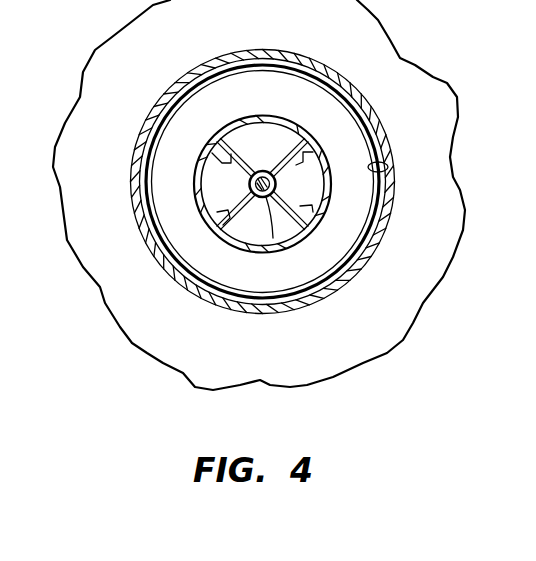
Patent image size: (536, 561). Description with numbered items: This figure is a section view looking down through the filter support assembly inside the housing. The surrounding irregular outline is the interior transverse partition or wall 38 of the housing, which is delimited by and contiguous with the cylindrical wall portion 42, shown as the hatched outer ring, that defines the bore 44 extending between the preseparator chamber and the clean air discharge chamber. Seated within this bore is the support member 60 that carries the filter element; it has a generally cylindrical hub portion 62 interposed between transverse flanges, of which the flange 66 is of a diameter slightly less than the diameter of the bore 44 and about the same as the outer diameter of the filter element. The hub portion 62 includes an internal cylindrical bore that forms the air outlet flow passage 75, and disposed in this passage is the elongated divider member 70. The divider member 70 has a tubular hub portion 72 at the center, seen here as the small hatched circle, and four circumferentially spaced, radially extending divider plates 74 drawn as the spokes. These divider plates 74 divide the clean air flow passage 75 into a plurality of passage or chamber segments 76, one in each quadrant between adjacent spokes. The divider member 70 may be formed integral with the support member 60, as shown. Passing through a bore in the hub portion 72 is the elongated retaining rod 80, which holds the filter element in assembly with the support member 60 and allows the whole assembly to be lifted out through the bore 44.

The interior transverse partition or wall 38 is at (416, 65).
The cylindrical wall portion 42 is at (346, 62).
The bore 44 is at (390, 165).
The support member 60 is at (360, 110).
The cylindrical hub portion 62 is at (311, 232).
The transverse flange 66 is at (358, 230).
The divider member 70 is at (282, 158).
The tubular hub portion 72 is at (250, 186).
The divider plates 74 is at (208, 154).
The air outlet flow passage 75 is at (251, 224).
The passage or chamber segments 76 is at (257, 133).
The retaining rod 80 is at (279, 244).